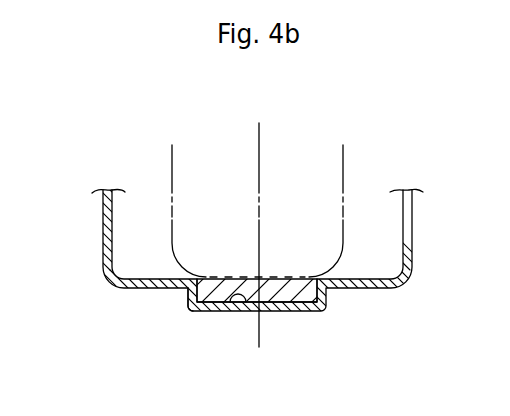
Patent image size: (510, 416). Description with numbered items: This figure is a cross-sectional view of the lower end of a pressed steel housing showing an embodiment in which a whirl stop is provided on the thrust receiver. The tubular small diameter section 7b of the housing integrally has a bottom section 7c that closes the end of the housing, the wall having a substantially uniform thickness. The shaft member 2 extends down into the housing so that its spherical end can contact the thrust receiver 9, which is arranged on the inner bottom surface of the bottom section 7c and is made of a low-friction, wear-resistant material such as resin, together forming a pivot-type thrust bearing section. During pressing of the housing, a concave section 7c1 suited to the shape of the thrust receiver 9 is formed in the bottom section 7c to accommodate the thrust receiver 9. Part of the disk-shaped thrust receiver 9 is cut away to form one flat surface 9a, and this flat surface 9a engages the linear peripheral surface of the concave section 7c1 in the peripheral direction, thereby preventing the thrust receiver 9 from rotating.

The shaft member 2 is at (322, 173).
The small diameter section 7b is at (103, 229).
The bottom section 7c is at (152, 289).
The concave section 7c1 is at (237, 295).
The thrust receiver 9 is at (287, 293).
The flat surface 9a is at (190, 291).